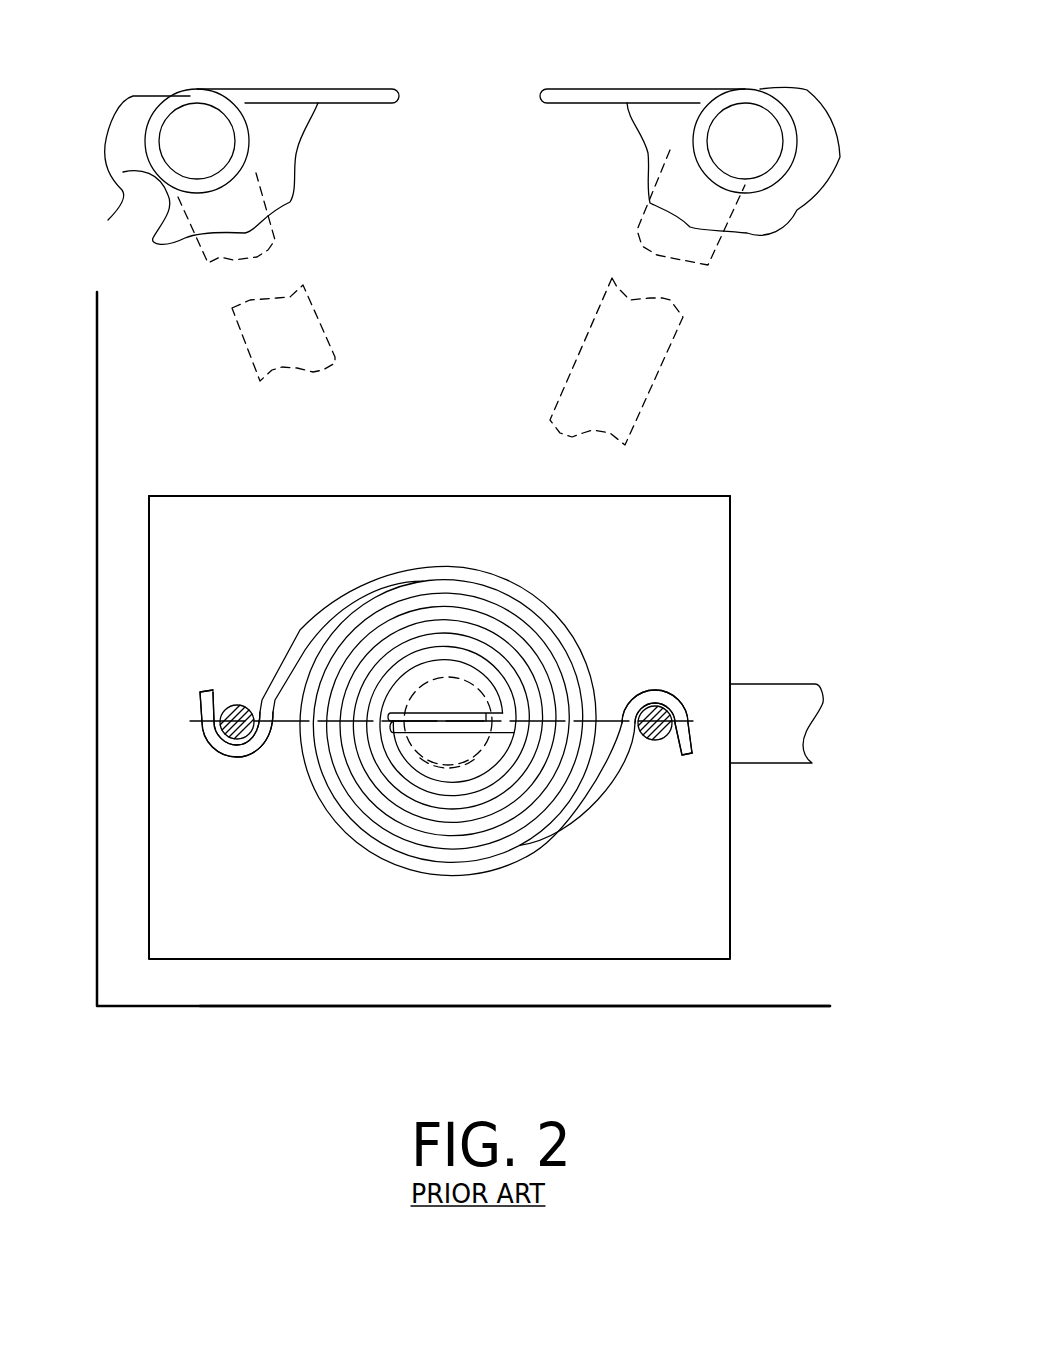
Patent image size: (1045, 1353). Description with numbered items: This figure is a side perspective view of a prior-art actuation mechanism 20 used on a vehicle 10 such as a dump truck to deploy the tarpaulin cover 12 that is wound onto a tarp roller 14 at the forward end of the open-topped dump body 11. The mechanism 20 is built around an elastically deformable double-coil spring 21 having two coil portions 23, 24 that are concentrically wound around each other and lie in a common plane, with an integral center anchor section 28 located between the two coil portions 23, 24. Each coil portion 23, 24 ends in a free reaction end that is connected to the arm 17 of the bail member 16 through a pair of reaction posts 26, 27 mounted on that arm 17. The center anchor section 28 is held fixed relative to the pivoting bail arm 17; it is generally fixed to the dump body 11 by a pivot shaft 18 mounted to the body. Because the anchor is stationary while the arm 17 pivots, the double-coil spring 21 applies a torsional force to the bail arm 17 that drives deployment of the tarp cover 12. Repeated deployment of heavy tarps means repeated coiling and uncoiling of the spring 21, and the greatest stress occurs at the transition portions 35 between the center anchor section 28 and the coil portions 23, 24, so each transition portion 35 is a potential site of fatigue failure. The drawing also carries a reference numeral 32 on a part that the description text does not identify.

The vehicle 10 is at (752, 1019).
The dump body 11 is at (131, 1010).
The tarpaulin cover 12 is at (363, 104).
The tarp roller 14 is at (108, 220).
The bail member 16 is at (308, 282).
The arm 17 is at (758, 764).
The pivot shaft 18 is at (410, 690).
The actuation mechanism 20 is at (679, 483).
The double-coil spring 21 is at (499, 565).
The coil portion 23 is at (228, 758).
The coil portion 24 is at (657, 690).
The reaction post 26 is at (237, 705).
The reaction post 27 is at (642, 742).
The center anchor section 28 is at (451, 777).
The housing 32 is at (732, 596).
The transition portion 35 is at (368, 724).